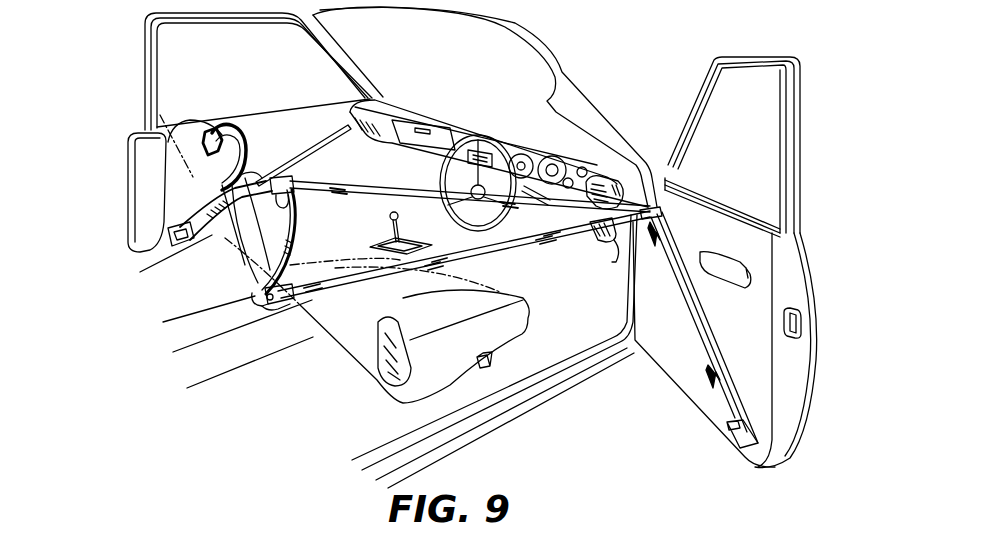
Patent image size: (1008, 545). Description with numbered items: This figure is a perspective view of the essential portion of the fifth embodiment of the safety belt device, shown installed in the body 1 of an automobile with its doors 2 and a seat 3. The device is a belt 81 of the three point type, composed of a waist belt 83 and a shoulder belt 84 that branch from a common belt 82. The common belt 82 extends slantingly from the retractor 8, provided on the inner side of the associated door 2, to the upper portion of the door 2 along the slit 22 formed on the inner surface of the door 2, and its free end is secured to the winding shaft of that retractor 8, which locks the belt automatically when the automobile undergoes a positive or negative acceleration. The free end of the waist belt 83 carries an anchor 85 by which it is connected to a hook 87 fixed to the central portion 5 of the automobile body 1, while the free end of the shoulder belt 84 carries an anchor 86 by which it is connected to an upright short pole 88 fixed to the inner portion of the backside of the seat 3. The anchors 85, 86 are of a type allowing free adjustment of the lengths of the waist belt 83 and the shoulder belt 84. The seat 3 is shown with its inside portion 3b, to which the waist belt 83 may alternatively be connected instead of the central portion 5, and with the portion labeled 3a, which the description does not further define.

The automobile body 1 is at (544, 355).
The door 2 is at (150, 62).
The seat 3 is at (332, 251).
The seat cushion / headrest portion 3a is at (162, 182).
The inside portion of the seat 3b is at (250, 268).
The central portion of the automobile body 5 is at (205, 325).
The retractor 8 is at (165, 237).
The slit 22 is at (327, 137).
The belt 81 is at (606, 250).
The common belt 82 is at (714, 377).
The waist belt 83 is at (377, 207).
The shoulder belt 84 is at (235, 140).
The anchor 85 is at (275, 306).
The anchor 86 is at (213, 128).
The hook 87 is at (260, 302).
The upright short pole 88 is at (163, 148).